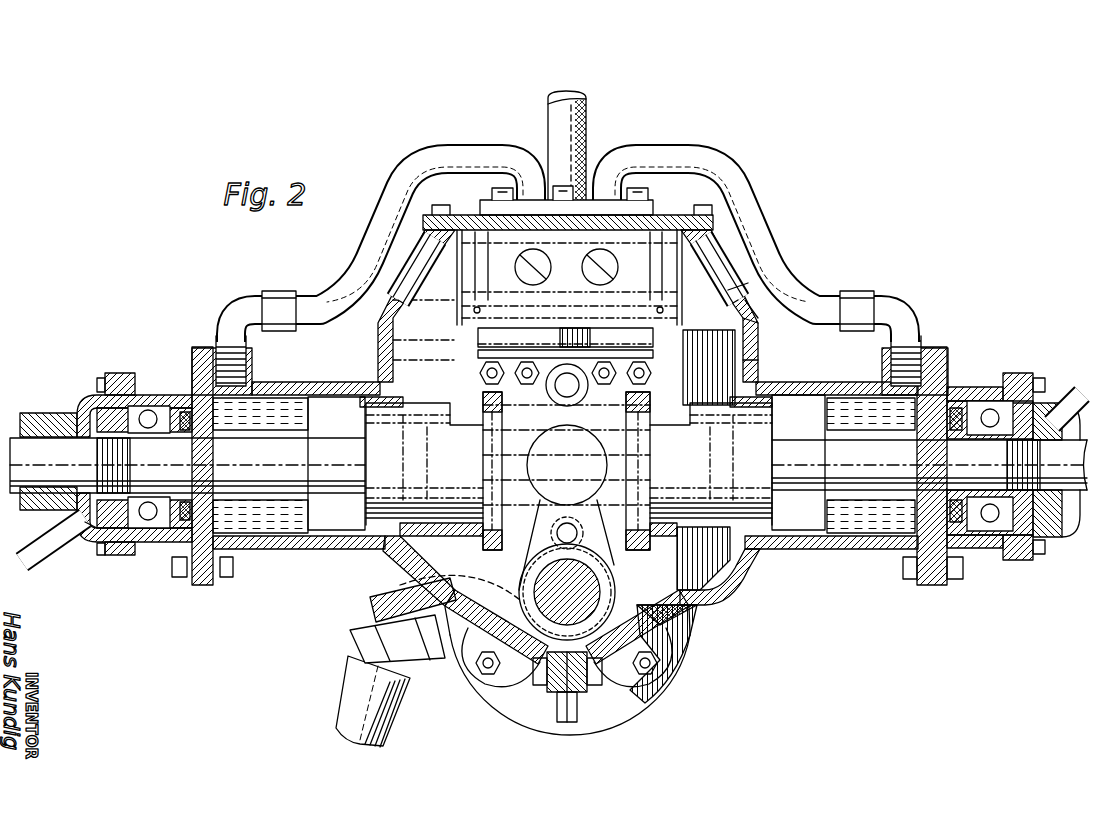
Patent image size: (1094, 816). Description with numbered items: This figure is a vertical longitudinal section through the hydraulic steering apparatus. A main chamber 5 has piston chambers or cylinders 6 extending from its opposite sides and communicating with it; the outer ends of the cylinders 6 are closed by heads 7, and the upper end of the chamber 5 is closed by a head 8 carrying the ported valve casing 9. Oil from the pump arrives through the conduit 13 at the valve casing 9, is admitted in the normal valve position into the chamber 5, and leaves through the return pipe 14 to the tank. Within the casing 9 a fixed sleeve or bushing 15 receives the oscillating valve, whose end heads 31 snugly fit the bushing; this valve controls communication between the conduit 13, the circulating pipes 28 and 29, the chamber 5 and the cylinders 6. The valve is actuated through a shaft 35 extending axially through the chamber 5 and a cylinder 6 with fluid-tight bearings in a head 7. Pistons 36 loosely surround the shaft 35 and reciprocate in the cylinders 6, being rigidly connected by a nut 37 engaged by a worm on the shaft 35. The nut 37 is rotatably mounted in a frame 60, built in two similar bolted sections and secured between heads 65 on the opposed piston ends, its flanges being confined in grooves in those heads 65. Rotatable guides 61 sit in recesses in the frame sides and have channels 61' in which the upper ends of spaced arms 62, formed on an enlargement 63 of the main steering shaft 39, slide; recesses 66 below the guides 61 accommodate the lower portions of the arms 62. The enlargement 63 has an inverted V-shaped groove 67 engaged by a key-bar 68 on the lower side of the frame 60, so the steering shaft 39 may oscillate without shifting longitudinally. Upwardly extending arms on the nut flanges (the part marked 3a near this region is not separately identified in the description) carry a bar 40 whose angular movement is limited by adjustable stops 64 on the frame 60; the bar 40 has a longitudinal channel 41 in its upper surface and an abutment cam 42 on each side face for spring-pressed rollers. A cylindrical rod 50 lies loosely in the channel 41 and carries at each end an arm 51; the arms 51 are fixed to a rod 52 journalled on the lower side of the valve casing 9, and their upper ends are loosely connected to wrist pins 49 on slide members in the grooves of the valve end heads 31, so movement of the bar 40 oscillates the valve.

The shaft journal portion 3a is at (569, 479).
The main chamber 5 is at (387, 348).
The piston chambers or cylinders 6 is at (281, 398).
The heads 7 is at (193, 583).
The head 8 is at (708, 222).
The ported valve casing 9 is at (507, 287).
The pipe or conduit 13 is at (552, 120).
The return pipe 14 is at (362, 685).
The sleeve or bushing 15 is at (480, 245).
The oil circulating pipe 28 is at (424, 158).
The oil circulating pipe 29 is at (661, 158).
The end heads 31 is at (423, 273).
The shaft 35 is at (548, 465).
The pistons 36 is at (328, 548).
The nut 37 is at (483, 440).
The main steering shaft 39 is at (690, 622).
The bar 40 is at (493, 357).
The longitudinal groove or channel 41 is at (745, 290).
The abutment cam 42 is at (560, 336).
The wrist pin 49 is at (410, 243).
The cylindrical rod 50 is at (753, 317).
The arm 51 is at (737, 273).
The rod 52 is at (755, 298).
The frame 60 is at (700, 363).
The rotatable guides 61 is at (566, 469).
The channels 61' is at (613, 471).
The spaced arms 62 is at (550, 517).
The enlargement 63 is at (470, 630).
The adjustable stops 64 is at (517, 380).
The heads 65 is at (640, 512).
The recesses 66 is at (547, 520).
The inverted V-shaped groove 67 is at (703, 603).
The key-bar 68 is at (742, 574).